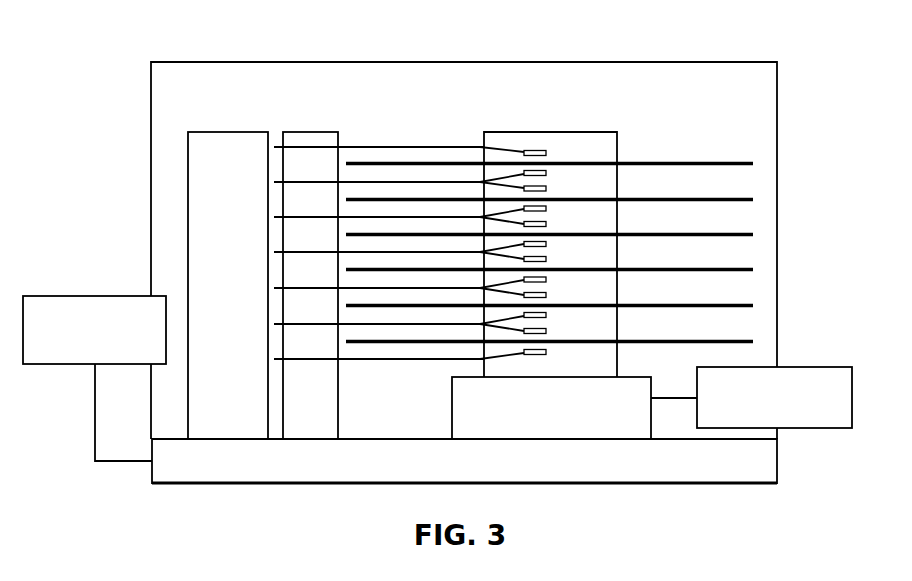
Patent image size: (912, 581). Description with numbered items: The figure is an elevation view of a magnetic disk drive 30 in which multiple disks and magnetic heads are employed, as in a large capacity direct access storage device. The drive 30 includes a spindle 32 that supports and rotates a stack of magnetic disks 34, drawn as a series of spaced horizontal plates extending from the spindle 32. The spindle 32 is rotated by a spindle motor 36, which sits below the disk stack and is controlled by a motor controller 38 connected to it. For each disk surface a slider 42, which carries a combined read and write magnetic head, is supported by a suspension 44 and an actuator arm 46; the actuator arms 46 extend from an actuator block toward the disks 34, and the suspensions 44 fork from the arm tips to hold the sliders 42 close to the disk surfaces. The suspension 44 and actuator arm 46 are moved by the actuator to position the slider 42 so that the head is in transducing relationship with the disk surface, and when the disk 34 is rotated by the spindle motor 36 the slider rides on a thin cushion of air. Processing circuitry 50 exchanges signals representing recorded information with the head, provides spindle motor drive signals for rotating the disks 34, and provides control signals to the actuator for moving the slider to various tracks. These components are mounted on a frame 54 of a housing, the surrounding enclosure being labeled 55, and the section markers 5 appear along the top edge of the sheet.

The section line 5- 5 is at (244, 11).
The magnetic disk drive 30 is at (665, 135).
The spindle 32 is at (607, 132).
The magnetic disk 34 is at (753, 164).
The spindle motor 36 is at (565, 420).
The motor controller 38 is at (812, 430).
The slider 42 is at (546, 173).
The suspension 44 is at (518, 180).
The actuator arm 46 is at (455, 181).
The processing circuitry 50 is at (68, 296).
The frame 54 is at (205, 483).
The cover 55 is at (715, 62).